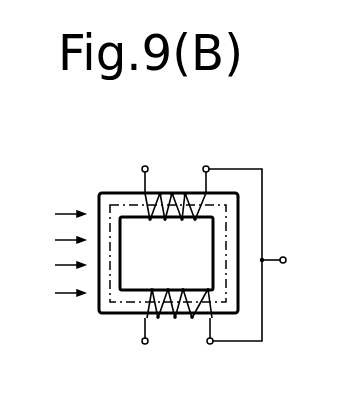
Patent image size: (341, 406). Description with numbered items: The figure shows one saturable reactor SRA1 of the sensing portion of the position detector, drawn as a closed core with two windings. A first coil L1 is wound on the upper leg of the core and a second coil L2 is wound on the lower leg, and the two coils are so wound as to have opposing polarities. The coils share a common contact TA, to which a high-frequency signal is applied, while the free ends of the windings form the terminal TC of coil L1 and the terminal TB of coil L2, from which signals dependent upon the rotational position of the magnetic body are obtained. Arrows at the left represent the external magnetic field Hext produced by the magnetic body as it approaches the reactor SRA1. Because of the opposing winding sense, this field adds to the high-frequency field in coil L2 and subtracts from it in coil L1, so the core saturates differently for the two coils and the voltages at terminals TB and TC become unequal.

The saturable reactor SRA1 is at (159, 215).
The external magnetic field Hext is at (56, 240).
The coil L1 is at (175, 196).
The coil L2 is at (179, 329).
The terminal TC is at (146, 167).
The common contact TA is at (259, 253).
The terminal TB is at (167, 348).